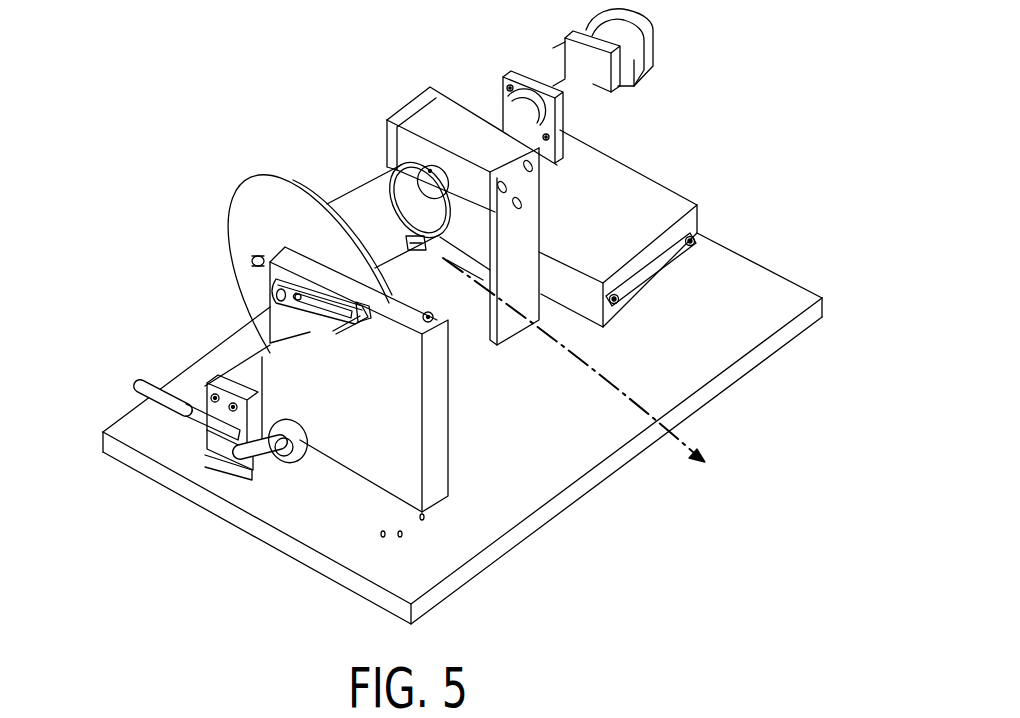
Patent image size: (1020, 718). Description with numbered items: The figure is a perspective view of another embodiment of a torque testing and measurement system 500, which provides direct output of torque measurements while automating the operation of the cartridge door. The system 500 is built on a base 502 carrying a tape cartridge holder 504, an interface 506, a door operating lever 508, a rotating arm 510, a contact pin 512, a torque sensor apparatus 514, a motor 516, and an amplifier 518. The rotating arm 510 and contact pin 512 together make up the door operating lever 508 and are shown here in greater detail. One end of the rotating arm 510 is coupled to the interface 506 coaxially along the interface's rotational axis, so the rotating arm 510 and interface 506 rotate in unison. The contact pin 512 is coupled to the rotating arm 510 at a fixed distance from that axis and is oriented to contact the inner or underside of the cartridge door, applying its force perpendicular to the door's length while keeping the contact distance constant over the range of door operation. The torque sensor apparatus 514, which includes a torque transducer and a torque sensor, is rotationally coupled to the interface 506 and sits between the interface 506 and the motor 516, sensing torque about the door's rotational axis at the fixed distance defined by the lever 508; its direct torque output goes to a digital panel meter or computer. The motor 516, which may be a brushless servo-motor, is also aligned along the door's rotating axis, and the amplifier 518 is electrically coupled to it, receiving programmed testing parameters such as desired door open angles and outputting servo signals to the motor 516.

The torque testing and measurement system 500 is at (136, 491).
The base 502 is at (760, 262).
The tape cartridge holder 504 is at (450, 458).
The interface 506 is at (250, 190).
The door operating lever 508 is at (316, 312).
The rotating arm 510 is at (274, 293).
The contact pin 512 is at (338, 334).
The torque sensor apparatus 514 is at (352, 188).
The motor 516 is at (530, 68).
The amplifier 518 is at (652, 287).